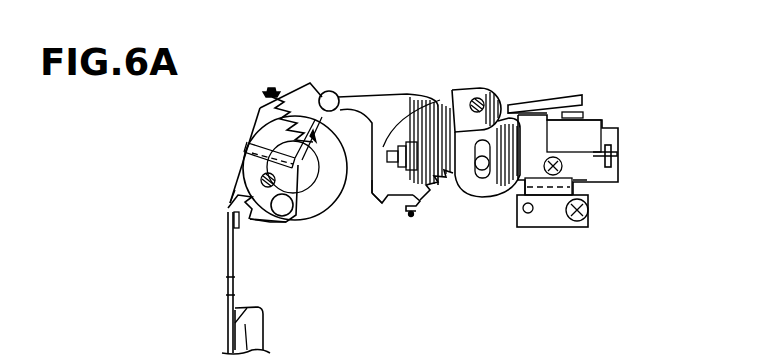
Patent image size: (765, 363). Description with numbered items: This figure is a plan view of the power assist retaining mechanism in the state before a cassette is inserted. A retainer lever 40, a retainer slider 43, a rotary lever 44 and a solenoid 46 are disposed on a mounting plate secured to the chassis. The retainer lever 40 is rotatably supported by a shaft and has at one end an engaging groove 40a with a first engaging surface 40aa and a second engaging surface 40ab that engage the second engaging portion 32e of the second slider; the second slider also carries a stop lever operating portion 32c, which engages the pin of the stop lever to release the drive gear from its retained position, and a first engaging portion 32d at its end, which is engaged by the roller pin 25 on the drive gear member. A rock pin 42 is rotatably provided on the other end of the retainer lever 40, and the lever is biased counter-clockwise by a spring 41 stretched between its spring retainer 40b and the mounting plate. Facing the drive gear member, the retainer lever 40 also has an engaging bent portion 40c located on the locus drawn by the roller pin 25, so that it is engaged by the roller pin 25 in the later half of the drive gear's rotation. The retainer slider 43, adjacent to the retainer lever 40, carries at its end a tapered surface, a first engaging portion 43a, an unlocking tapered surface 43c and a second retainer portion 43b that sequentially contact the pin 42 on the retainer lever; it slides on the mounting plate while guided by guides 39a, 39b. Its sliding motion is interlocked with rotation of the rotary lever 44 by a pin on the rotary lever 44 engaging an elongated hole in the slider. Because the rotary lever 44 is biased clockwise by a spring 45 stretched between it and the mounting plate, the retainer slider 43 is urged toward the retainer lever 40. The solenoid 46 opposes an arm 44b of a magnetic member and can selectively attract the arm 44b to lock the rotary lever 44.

The roller pin 25 is at (289, 212).
The stop lever operating portion 32c is at (247, 322).
The first engaging portion 32d is at (268, 222).
The second engaging portion 32e is at (228, 283).
The guide 39a is at (453, 94).
The guide 39b is at (615, 156).
The retainer lever 40 is at (262, 110).
The engaging groove 40a is at (228, 207).
The first engaging surface 40aa is at (230, 197).
The second engaging surface 40ab is at (248, 228).
The spring retainer 40b is at (322, 172).
The engaging bent portion 40c is at (312, 120).
The spring 41 is at (290, 90).
The rock pin 42 is at (336, 94).
The retainer slider 43 is at (434, 95).
The first engaging portion 43a is at (438, 100).
The second retainer portion 43b is at (406, 208).
The unlocking tapered surface 43c is at (370, 178).
The rotary lever 44 is at (500, 92).
The arm 44b is at (580, 95).
The spring 45 is at (468, 207).
The solenoid 46 is at (603, 118).